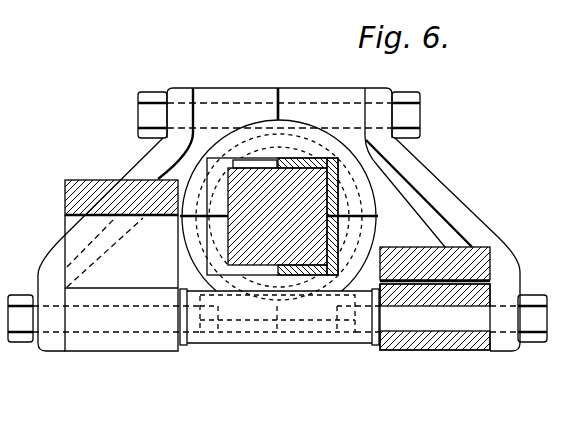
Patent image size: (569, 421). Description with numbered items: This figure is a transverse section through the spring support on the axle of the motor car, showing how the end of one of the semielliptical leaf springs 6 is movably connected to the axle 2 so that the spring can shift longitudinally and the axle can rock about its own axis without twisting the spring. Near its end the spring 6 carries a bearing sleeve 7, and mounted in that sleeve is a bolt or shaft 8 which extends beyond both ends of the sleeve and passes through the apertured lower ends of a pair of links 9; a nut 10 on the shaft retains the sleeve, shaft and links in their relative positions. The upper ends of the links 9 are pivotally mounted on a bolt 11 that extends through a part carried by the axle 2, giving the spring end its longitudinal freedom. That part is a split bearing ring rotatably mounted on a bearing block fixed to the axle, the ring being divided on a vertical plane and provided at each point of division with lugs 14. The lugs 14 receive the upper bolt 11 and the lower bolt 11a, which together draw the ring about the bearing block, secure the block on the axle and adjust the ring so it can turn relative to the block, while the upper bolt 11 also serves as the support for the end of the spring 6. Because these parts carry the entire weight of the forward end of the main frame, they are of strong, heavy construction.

The axle 2 is at (238, 178).
The semielliptical leaf springs 6 is at (87, 193).
The bearing sleeves 7 is at (137, 340).
The bolt or shaft 8 is at (353, 330).
The links 9 is at (143, 164).
The nut 10 is at (22, 315).
The bolt 11 is at (307, 102).
The bolt 11a is at (320, 322).
The lugs 14 is at (200, 97).